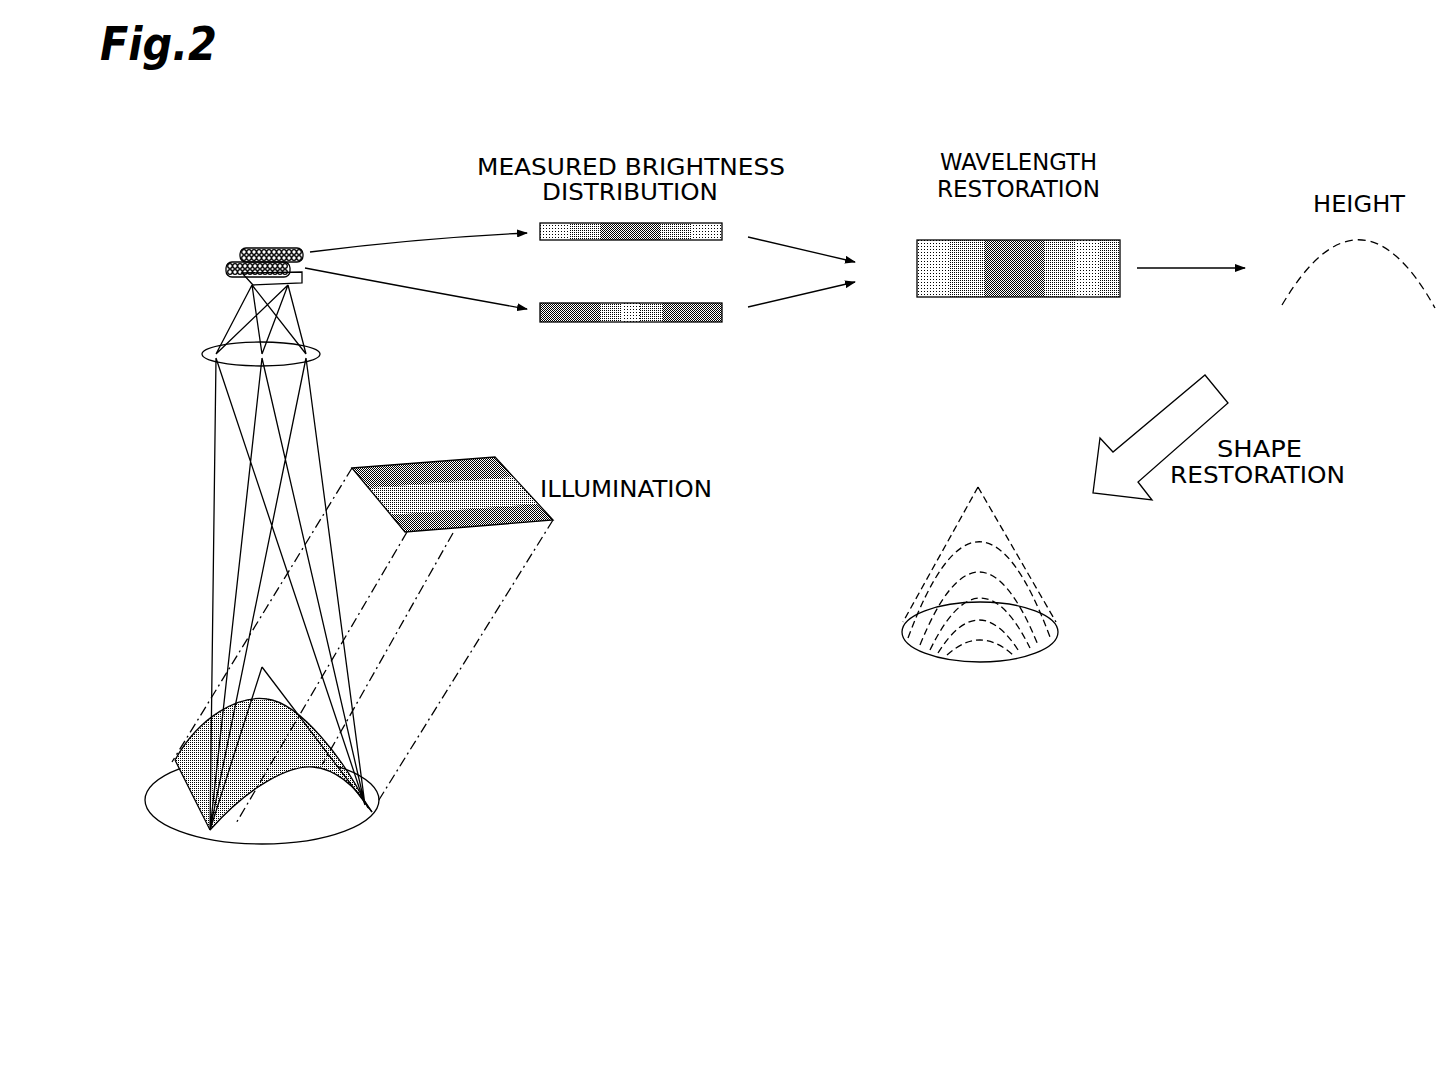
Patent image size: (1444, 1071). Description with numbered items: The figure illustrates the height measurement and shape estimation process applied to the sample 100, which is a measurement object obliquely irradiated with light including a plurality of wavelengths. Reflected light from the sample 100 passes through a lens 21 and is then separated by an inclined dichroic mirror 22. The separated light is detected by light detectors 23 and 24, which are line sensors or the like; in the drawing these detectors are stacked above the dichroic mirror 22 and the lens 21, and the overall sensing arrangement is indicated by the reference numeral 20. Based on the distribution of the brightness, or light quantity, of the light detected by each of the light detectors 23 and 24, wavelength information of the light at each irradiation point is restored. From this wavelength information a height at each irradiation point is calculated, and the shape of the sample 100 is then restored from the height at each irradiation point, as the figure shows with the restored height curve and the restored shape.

The imaging unit 20 is at (212, 240).
The lens 21 is at (316, 348).
The inclined dichroic mirror 22 is at (297, 283).
The light detector 23 is at (272, 249).
The light detector 24 is at (226, 267).
The sample 100 is at (307, 845).